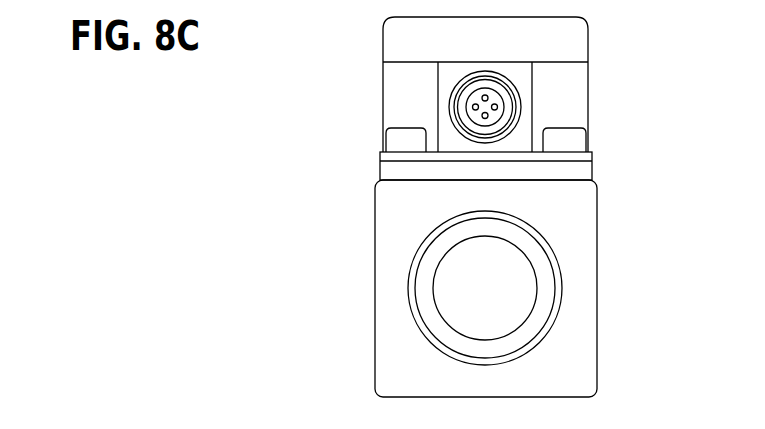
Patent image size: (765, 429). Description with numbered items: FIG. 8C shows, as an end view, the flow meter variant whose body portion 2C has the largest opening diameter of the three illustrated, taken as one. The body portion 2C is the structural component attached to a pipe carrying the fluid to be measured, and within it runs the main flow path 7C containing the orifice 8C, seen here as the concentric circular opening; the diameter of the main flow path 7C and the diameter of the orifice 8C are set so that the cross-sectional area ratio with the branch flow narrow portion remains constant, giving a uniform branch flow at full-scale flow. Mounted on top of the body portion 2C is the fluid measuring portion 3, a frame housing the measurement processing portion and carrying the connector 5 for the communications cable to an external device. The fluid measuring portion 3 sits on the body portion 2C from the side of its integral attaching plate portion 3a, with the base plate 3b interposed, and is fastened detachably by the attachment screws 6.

The body portion 2C is at (598, 220).
The fluid measuring portion 3 is at (588, 92).
The attaching plate portion 3a is at (381, 157).
The base plate 3b is at (386, 170).
The connector 5 is at (452, 116).
The attachment screws 6 is at (580, 138).
The main flow path 7C is at (414, 301).
The orifice 8C is at (547, 298).